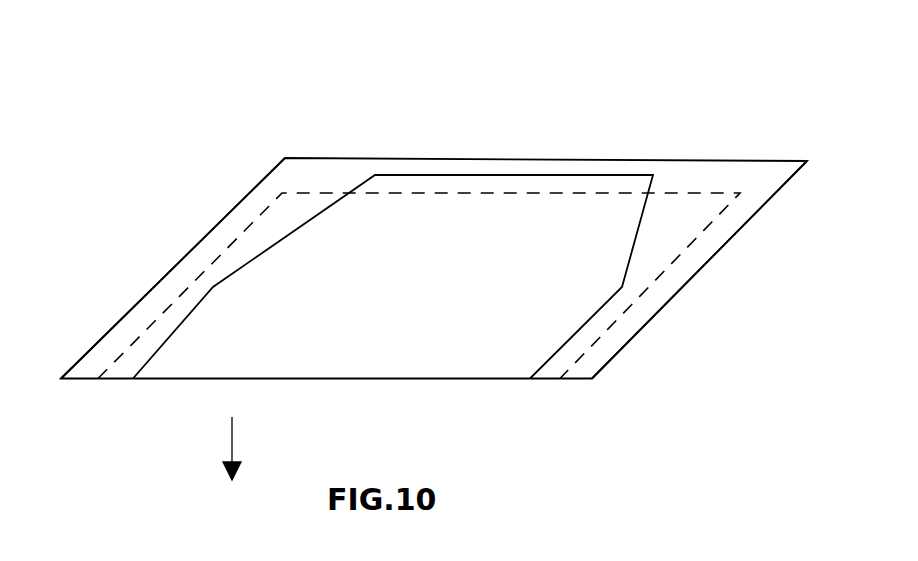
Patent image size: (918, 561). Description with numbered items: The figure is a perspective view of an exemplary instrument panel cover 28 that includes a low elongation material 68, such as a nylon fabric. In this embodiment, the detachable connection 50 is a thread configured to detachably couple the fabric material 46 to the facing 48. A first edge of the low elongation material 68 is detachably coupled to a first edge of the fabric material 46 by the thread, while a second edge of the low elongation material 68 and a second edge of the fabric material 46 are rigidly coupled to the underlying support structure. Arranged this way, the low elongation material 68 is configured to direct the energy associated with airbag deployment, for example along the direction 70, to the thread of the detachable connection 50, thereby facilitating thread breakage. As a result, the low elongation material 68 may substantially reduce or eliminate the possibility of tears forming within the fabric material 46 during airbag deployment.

The instrument panel cover 28 is at (493, 92).
The fabric material 46 is at (675, 212).
The facing 48 is at (192, 263).
The detachable connection 50 is at (675, 258).
The low elongation material 68 is at (302, 227).
The direction 70 is at (230, 440).